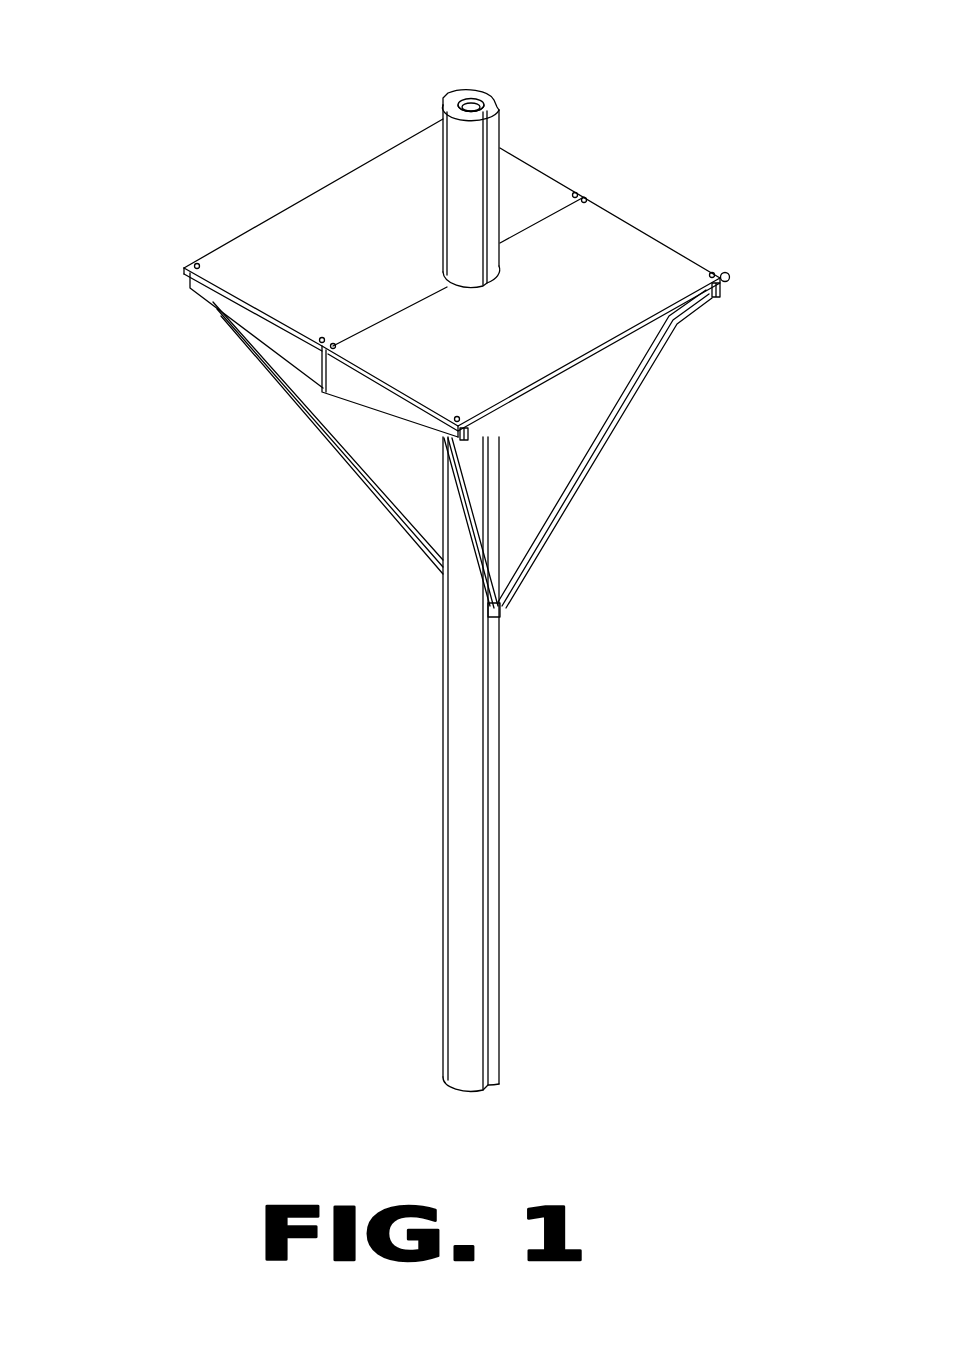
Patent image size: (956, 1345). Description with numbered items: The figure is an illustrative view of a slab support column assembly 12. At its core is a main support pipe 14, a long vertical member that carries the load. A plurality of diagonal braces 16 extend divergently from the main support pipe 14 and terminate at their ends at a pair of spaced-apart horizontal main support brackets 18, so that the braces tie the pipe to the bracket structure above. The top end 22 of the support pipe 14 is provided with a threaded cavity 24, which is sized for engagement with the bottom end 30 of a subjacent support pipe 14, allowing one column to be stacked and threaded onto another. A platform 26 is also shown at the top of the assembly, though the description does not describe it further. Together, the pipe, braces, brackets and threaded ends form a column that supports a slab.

The slab support column assembly 12 is at (660, 142).
The main support pipe 14 is at (465, 863).
The diagonal braces 16 is at (548, 522).
The horizontal main support bracket 18 is at (327, 378).
The top end 22 is at (443, 122).
The threaded cavity 24 is at (482, 106).
The platform 26 is at (331, 211).
The bottom end 30 is at (455, 1055).